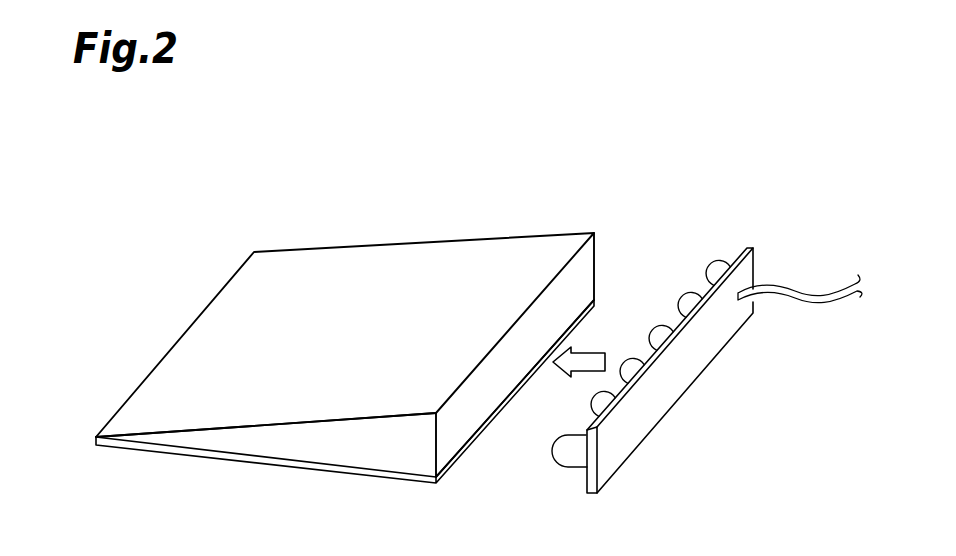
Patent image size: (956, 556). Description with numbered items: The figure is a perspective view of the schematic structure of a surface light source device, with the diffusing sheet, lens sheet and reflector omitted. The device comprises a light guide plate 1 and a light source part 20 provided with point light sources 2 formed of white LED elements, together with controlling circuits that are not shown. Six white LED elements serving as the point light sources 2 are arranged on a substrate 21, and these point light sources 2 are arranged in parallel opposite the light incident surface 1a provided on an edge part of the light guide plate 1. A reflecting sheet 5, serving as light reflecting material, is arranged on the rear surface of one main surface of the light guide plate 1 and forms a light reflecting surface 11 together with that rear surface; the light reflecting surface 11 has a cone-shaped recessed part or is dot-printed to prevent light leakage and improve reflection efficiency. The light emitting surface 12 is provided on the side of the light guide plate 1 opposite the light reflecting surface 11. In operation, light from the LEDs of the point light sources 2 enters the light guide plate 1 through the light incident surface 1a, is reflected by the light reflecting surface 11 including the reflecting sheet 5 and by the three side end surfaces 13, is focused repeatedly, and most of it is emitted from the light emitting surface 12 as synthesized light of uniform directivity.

The light guide plate 1 is at (312, 364).
The light incident surface 1a is at (457, 437).
The light emitting surface 12 is at (338, 262).
The side end surfaces 13 is at (94, 437).
The light reflecting surface 11 is at (247, 458).
The reflecting sheet 5 is at (402, 480).
The light source part 20 is at (707, 341).
The substrate 21 is at (690, 352).
The point light sources 2 is at (641, 359).